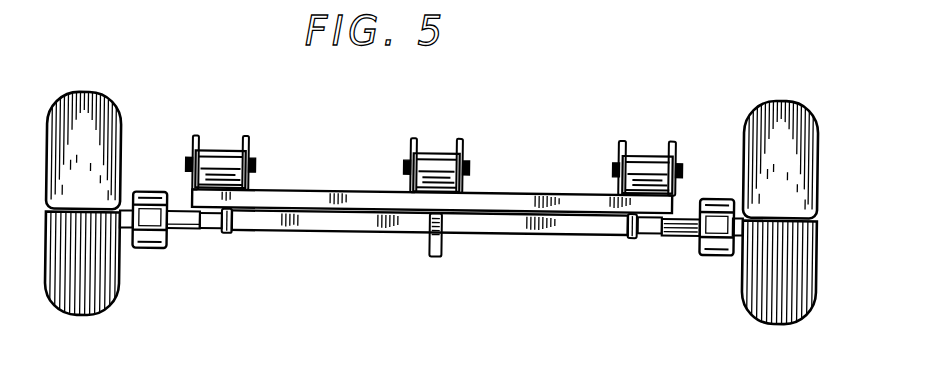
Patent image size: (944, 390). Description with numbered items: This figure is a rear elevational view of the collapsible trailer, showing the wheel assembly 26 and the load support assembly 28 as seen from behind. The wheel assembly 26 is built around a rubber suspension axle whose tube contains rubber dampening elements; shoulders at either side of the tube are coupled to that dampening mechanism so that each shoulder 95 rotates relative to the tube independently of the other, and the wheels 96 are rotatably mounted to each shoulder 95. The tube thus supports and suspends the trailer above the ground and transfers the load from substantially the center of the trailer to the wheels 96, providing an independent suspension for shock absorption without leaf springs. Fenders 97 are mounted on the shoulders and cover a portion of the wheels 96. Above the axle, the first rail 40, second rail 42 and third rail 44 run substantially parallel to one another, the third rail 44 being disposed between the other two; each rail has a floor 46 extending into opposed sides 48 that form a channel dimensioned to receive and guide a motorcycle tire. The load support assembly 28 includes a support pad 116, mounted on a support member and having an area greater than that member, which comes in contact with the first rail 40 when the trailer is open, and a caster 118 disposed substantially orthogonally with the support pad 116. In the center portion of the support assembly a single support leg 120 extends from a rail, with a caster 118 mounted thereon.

The wheel assembly 26 is at (535, 237).
The load support assembly 28 is at (198, 254).
The first rail 40 is at (678, 139).
The second rail 42 is at (244, 134).
The third rail 44 is at (463, 133).
The floor 46 is at (210, 163).
The opposed sides 48 is at (412, 143).
The shoulder 95 is at (148, 254).
The wheels 96 is at (80, 318).
The fenders 97 is at (107, 118).
The support pad 116 is at (664, 231).
The caster 118 is at (227, 240).
The support leg 120 is at (445, 243).